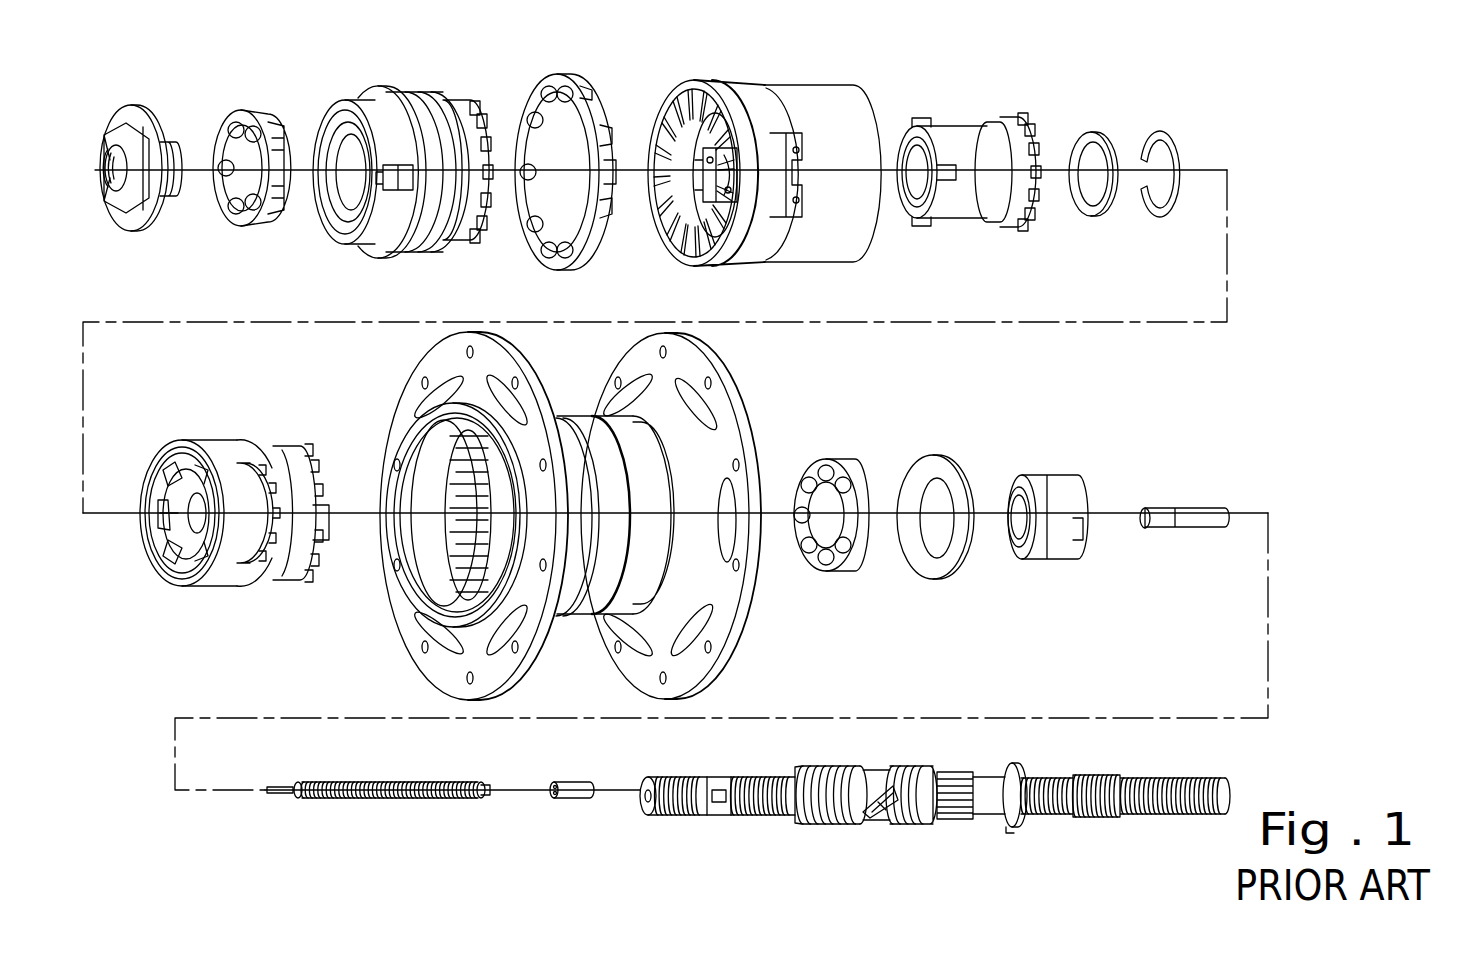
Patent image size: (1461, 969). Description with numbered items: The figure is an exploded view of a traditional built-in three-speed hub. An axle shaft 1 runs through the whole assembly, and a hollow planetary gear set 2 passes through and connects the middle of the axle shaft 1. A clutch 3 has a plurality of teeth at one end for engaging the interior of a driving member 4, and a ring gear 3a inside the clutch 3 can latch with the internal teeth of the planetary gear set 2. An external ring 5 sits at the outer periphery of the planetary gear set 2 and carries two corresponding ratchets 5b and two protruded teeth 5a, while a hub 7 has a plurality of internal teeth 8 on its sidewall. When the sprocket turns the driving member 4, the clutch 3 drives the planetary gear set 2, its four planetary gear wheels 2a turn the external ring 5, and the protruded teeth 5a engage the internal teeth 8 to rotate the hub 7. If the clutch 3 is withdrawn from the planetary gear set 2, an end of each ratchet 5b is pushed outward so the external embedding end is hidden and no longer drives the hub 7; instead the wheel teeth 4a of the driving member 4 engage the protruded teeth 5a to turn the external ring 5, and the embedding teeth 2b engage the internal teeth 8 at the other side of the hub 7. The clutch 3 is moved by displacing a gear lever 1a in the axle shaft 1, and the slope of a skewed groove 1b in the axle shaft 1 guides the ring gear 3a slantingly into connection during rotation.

The axle shaft 1 is at (990, 812).
The gear lever 1a is at (338, 797).
The skewed groove 1b is at (895, 803).
The hollow planetary gear set 2 is at (212, 455).
The planetary gear wheels 2a is at (240, 580).
The embedding teeth 2b is at (307, 470).
The clutch 3 is at (955, 135).
The ring gear 3a is at (1018, 120).
The driving member 4 is at (402, 95).
The wheel teeth 4a is at (458, 100).
The external ring 5 is at (800, 95).
The protruded teeth 5a is at (672, 100).
The ratchets 5b is at (790, 205).
The hub 7 is at (740, 445).
The internal teeth 8 is at (455, 555).